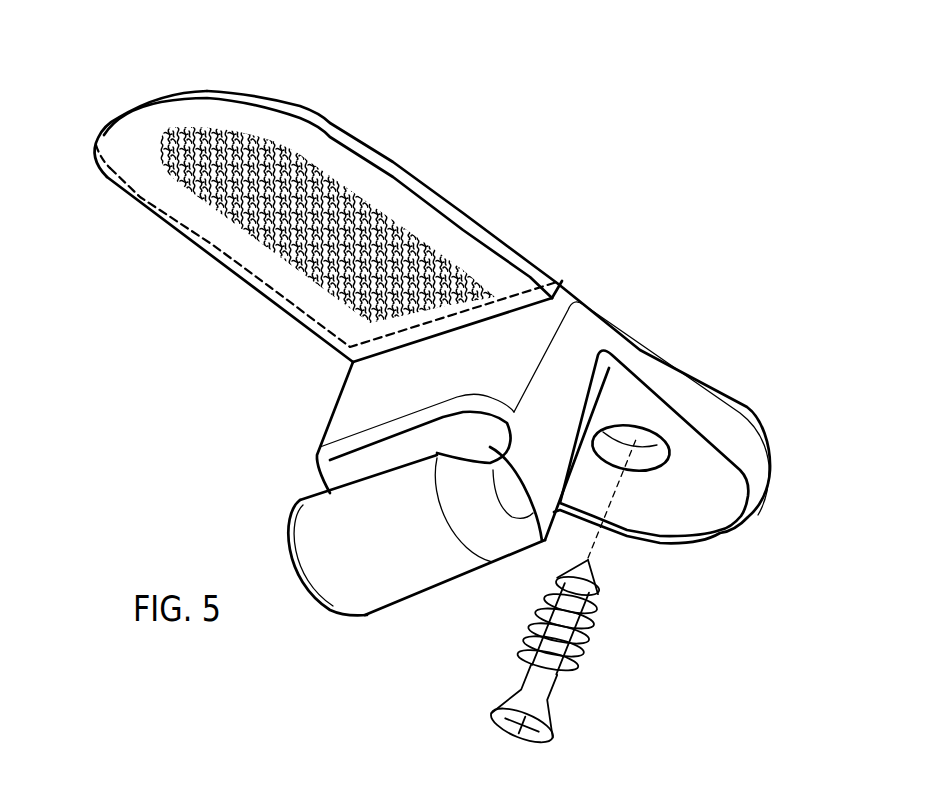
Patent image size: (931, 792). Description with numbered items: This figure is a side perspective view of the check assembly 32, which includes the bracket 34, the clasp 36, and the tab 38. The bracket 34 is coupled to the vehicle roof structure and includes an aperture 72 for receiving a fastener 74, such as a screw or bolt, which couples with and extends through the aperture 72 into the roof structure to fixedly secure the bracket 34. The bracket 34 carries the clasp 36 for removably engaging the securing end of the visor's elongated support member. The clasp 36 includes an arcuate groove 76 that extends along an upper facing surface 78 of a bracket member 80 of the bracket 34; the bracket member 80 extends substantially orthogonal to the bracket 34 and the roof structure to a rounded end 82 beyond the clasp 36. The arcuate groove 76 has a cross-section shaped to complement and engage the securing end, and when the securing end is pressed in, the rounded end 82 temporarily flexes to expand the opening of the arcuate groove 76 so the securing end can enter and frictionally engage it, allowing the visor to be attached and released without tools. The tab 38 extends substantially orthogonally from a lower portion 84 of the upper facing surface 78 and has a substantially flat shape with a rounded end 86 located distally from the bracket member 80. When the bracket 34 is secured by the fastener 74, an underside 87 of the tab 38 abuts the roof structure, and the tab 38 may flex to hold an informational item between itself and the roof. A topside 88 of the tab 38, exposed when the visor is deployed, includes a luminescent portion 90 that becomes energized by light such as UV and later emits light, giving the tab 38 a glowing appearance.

The check assembly 32 is at (658, 188).
The bracket 34 is at (710, 407).
The clasp 36 is at (372, 465).
The tab 38 is at (392, 165).
The aperture 72 is at (657, 462).
The fastener 74 is at (578, 647).
The arcuate groove 76 is at (535, 528).
The upper facing surface 78 is at (358, 403).
The bracket member 80 is at (575, 340).
The rounded end 82 is at (490, 543).
The lower portion 84 is at (348, 352).
The rounded end 86 is at (113, 124).
The underside 87 is at (150, 137).
The topside 88 is at (143, 153).
The luminescent portion 90 is at (232, 203).